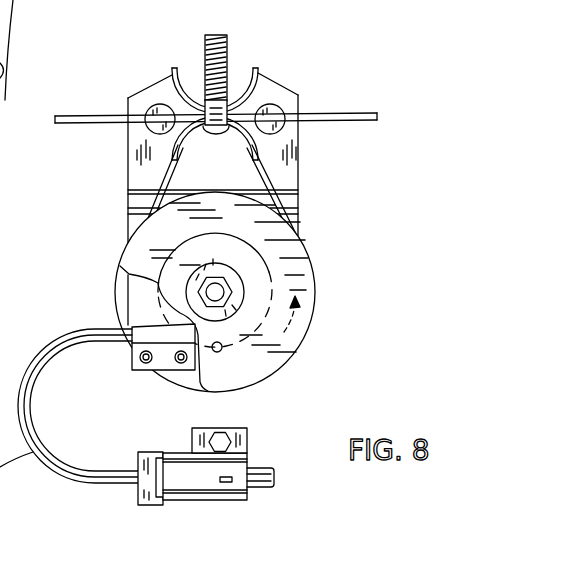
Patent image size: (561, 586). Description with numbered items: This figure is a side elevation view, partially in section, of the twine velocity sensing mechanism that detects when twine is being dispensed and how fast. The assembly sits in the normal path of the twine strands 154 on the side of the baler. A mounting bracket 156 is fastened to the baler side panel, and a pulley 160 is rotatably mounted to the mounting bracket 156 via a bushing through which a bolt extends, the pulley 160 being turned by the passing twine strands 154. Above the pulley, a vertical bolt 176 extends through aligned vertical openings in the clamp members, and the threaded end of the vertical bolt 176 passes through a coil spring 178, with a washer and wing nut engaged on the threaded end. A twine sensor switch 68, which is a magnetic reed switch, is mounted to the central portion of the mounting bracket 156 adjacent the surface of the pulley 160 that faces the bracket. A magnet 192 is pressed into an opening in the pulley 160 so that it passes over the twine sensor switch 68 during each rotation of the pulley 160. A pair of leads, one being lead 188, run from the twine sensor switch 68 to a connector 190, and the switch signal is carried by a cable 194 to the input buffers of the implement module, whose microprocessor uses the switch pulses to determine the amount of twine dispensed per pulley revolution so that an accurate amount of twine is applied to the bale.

The twine sensor switch 68 is at (147, 330).
The twine strands 154 is at (360, 113).
The mounting bracket 156 is at (305, 190).
The pulley 160 is at (314, 266).
The vertical bolt 176 is at (219, 134).
The coil spring 178 is at (228, 57).
The lead 188 is at (57, 443).
The connector 190 is at (173, 452).
The magnet 192 is at (219, 352).
The cable 194 is at (258, 468).